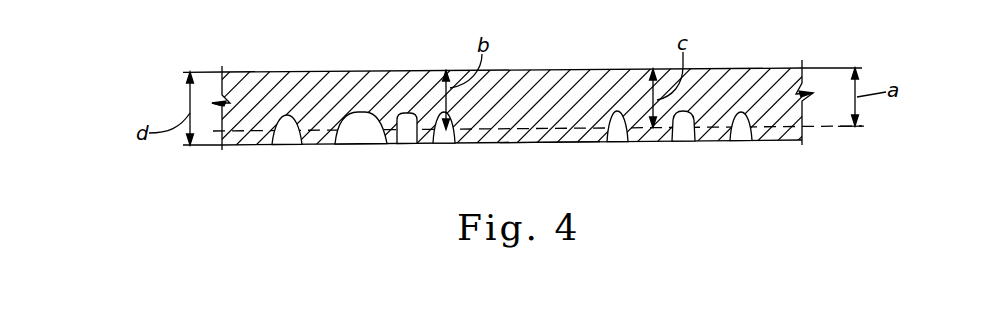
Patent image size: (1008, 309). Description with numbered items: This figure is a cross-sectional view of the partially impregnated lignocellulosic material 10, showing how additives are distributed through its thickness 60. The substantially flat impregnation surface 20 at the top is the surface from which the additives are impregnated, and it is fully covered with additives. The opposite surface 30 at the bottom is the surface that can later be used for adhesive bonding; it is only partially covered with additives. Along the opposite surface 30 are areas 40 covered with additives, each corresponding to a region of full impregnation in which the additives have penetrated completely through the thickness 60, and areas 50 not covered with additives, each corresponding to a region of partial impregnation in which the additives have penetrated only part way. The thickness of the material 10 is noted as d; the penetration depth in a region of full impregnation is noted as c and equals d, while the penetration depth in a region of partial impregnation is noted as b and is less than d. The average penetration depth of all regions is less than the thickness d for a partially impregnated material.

The partially impregnated lignocellulosic material 10 is at (157, 104).
The impregnation surface 20 is at (350, 72).
The opposite surface 30 is at (311, 144).
The area covered with additives 40 is at (540, 142).
The area not covered with additives 50 is at (357, 145).
The thickness 60 is at (805, 85).